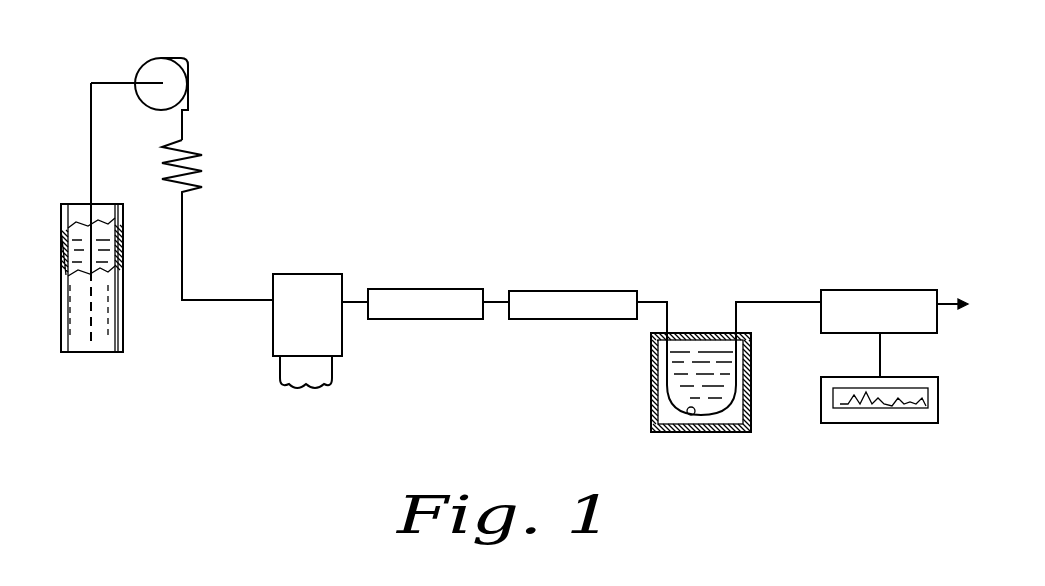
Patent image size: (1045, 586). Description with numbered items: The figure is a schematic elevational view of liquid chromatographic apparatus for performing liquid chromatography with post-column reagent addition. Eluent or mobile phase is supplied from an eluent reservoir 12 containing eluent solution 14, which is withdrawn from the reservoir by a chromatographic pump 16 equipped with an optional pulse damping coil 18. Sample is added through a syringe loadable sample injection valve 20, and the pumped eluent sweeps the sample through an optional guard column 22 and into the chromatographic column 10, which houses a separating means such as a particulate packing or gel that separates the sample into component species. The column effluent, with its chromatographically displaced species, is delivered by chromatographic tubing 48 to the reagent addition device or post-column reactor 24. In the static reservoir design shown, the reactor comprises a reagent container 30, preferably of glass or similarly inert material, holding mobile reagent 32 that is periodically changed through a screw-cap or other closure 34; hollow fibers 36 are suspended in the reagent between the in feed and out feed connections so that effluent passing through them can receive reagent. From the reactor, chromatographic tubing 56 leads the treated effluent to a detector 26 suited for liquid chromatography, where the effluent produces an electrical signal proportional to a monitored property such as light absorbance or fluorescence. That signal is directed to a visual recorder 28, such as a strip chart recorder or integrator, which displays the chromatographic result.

The chromatographic column 10 is at (575, 305).
The eluent reservoir 12 is at (113, 325).
The eluent solution 14 is at (82, 245).
The chromatographic pump 16 is at (162, 70).
The pulse damping coil 18 is at (190, 150).
The sample injection valve 20 is at (285, 330).
The guard column 22 is at (420, 297).
The post-column reactor 24 is at (720, 318).
The detector 26 is at (842, 323).
The visual recorder 28 is at (904, 386).
The reagent container 30 is at (651, 397).
The mobile reagent 32 is at (727, 415).
The closure 34 is at (698, 334).
The hollow fibers 36 is at (688, 414).
The chromatographic tubing 48 is at (655, 300).
The chromatographic tubing 56 is at (794, 302).